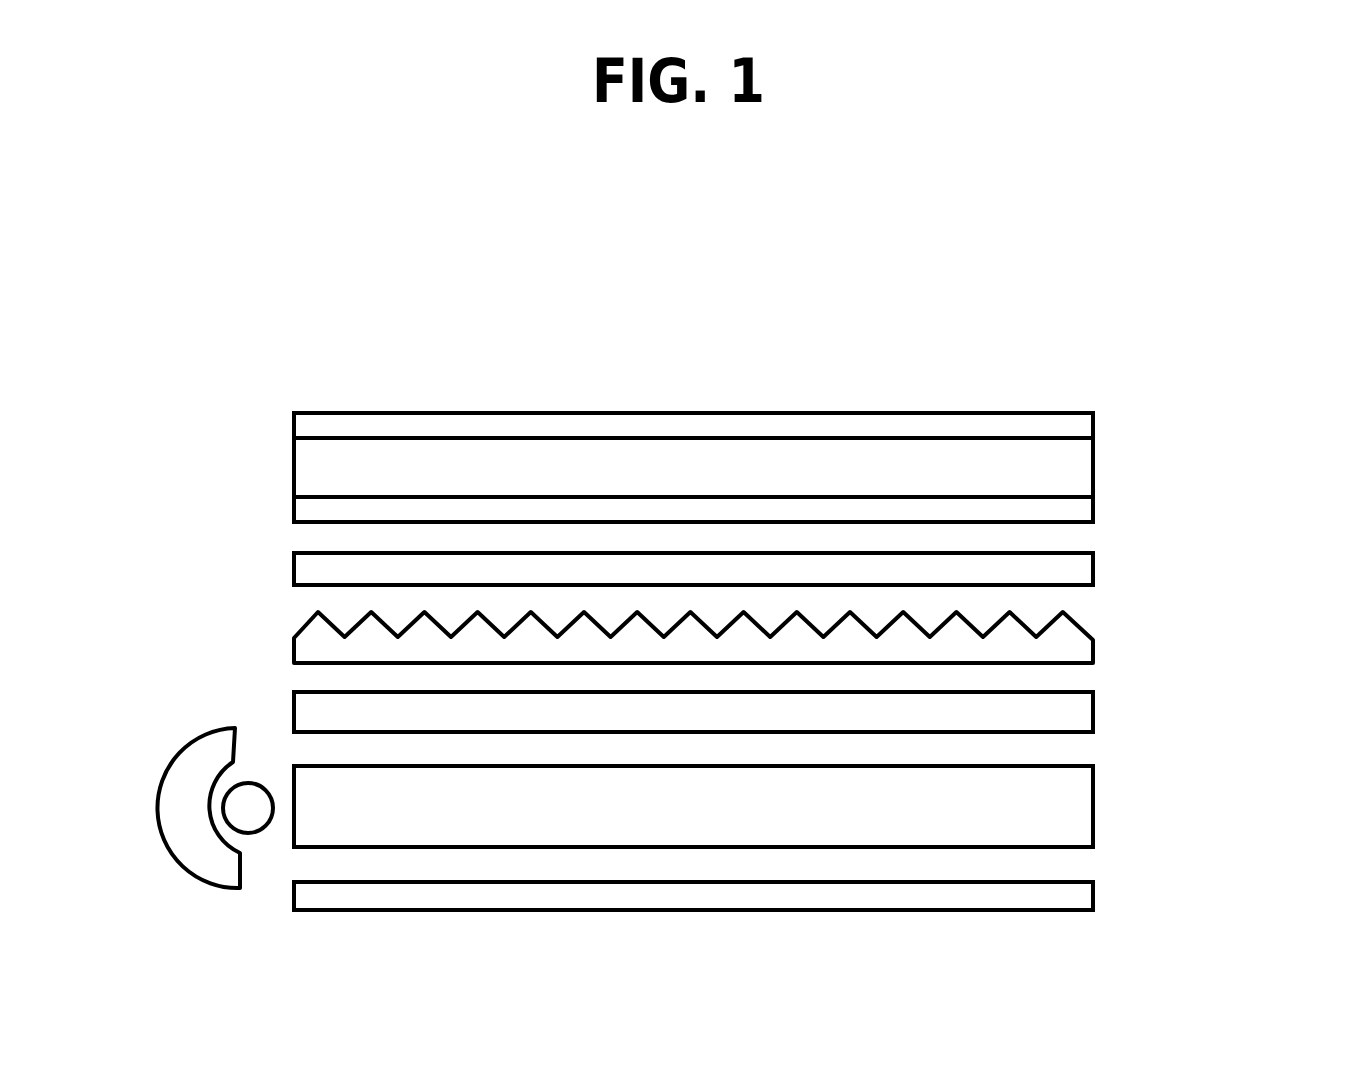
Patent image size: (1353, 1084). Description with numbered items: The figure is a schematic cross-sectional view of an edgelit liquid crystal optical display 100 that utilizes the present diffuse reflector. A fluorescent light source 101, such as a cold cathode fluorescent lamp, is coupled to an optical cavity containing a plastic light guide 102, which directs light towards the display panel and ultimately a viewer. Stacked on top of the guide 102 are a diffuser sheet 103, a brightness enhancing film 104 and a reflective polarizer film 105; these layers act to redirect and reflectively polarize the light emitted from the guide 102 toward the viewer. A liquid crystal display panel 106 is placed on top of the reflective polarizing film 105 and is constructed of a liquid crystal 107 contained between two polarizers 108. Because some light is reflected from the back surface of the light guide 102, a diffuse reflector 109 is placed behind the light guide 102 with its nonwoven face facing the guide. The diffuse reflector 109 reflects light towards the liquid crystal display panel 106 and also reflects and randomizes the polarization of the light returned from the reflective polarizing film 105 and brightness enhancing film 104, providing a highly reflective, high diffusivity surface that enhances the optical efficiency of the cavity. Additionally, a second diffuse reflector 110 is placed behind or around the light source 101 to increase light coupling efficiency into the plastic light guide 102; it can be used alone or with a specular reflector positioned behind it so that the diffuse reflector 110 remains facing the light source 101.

The optical display 100 is at (362, 367).
The fluorescent light source 101 is at (262, 833).
The plastic light guide 102 is at (1093, 817).
The diffuser sheet 103 is at (1093, 713).
The brightness enhancing film 104 is at (1093, 643).
The reflective polarizer film 105 is at (1093, 570).
The liquid crystal display panel 106 is at (264, 403).
The liquid crystal 107 is at (1093, 468).
The polarizers 108 is at (1093, 430).
The diffuse reflector 109 is at (1093, 895).
The diffuse reflector 110 is at (183, 768).